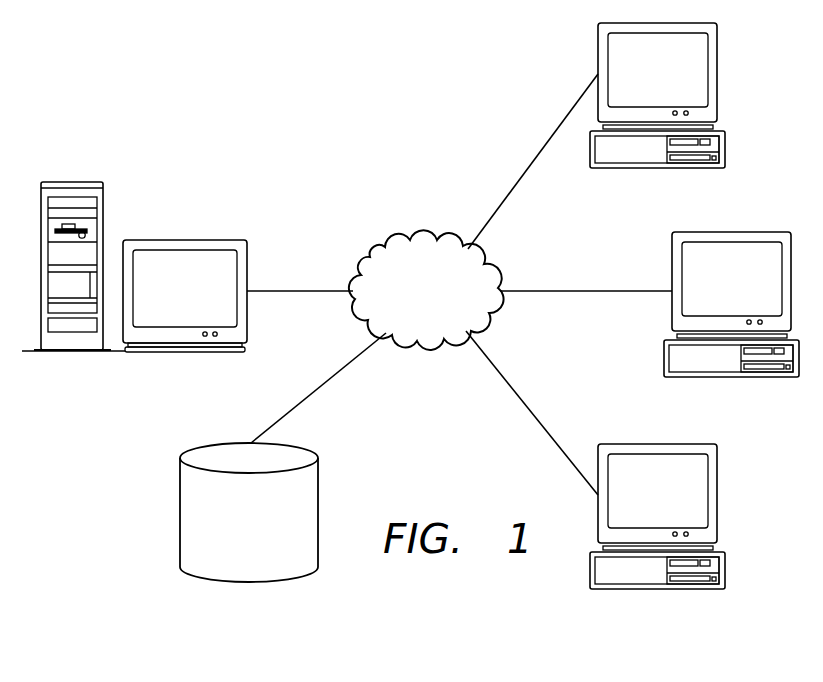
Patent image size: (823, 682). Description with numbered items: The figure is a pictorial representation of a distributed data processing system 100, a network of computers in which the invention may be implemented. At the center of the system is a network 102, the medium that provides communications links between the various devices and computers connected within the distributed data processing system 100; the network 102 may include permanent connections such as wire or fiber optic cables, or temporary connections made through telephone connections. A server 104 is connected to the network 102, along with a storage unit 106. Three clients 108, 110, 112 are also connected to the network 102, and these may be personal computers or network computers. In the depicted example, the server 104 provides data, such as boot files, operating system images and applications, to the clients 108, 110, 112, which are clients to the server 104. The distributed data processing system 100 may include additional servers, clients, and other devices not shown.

The distributed data processing system 100 is at (305, 106).
The network 102 is at (447, 321).
The server 104 is at (209, 297).
The storage unit 106 is at (272, 554).
The client 108 is at (682, 86).
The client 110 is at (757, 294).
The client 112 is at (682, 507).